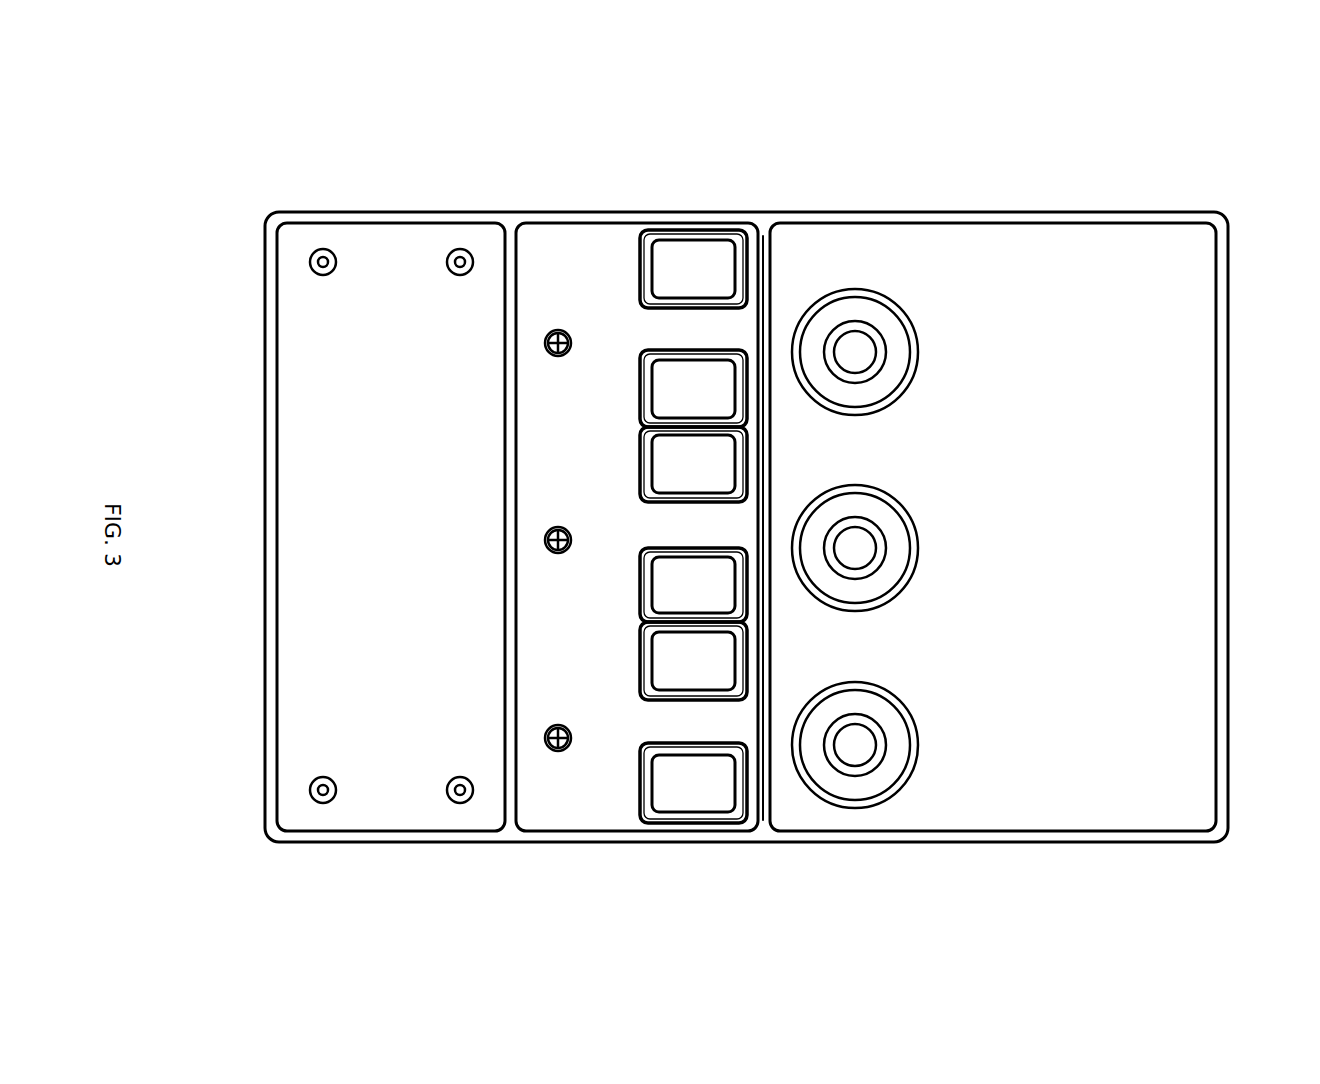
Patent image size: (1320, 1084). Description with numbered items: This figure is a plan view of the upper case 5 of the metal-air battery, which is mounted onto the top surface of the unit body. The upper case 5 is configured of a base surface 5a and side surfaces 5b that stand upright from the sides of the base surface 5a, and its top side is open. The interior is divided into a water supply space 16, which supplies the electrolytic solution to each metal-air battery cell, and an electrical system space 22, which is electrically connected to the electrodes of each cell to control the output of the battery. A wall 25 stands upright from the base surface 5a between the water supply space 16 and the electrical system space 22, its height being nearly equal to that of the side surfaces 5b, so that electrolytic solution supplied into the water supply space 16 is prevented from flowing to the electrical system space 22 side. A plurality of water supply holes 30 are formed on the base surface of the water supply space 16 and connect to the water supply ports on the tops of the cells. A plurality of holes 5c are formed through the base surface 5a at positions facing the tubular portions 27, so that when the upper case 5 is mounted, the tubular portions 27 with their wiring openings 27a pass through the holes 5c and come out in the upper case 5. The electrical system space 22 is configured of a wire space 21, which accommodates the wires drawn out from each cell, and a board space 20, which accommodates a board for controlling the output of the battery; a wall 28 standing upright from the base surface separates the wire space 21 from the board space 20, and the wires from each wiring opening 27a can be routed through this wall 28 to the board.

The upper case 5 is at (1100, 211).
The base surface 5a is at (1125, 530).
The side surfaces 5b is at (960, 212).
The holes 5c is at (680, 228).
The water supply space 16 is at (1027, 252).
The board space 20 is at (422, 280).
The wire space 21 is at (585, 285).
The electrical system space 22 is at (383, 98).
The wall 25 is at (752, 230).
The tubular portions 27 is at (647, 373).
The wiring openings 27a is at (688, 272).
The wall 28 is at (520, 800).
The water supply holes 30 is at (862, 738).